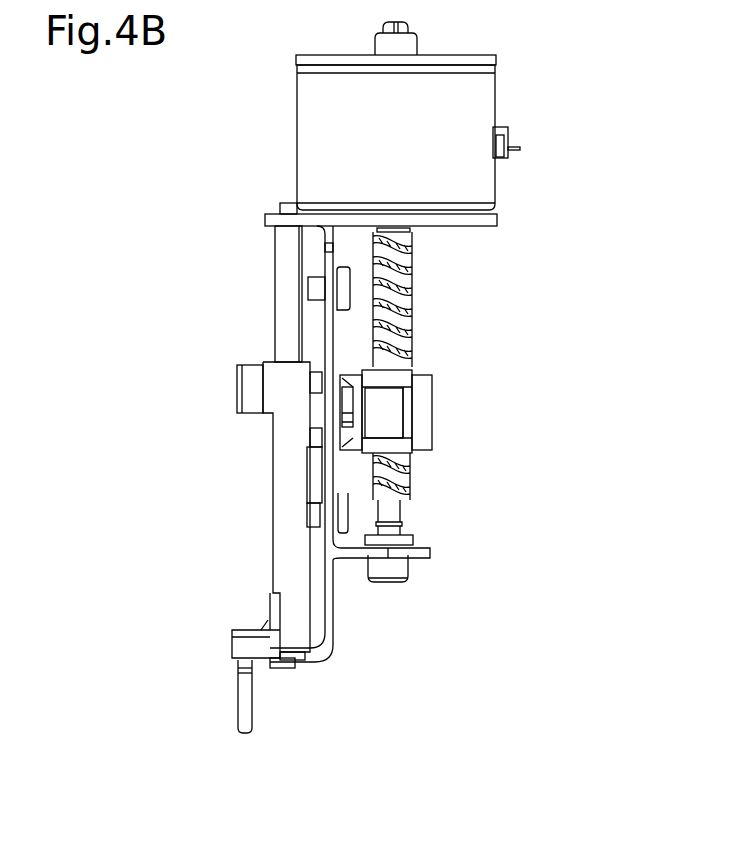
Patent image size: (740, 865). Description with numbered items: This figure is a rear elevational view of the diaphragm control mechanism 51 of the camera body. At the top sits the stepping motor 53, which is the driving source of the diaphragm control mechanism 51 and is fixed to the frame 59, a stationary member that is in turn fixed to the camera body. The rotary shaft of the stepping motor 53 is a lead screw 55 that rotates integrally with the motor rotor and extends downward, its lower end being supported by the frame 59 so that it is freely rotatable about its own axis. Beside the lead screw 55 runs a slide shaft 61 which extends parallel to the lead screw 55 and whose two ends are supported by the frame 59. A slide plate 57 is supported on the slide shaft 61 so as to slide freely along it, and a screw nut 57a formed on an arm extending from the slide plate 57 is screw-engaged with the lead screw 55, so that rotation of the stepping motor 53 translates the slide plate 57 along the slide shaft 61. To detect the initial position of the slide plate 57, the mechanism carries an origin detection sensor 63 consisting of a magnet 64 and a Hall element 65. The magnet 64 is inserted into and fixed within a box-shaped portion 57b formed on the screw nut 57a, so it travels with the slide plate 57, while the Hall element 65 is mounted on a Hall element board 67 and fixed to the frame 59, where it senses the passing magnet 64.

The diaphragm control mechanism 51 is at (135, 119).
The stepping motor 53 is at (328, 133).
The lead screw 55 is at (412, 252).
The slide plate 57 is at (282, 450).
The screw nut 57a is at (428, 385).
The box-shaped portion 57b is at (410, 403).
The frame 59 is at (328, 617).
The slide shaft 61 is at (285, 260).
The origin detection sensor 63 is at (545, 415).
The magnet 64 is at (393, 415).
The Hall element 65 is at (348, 403).
The Hall element board 67 is at (405, 493).